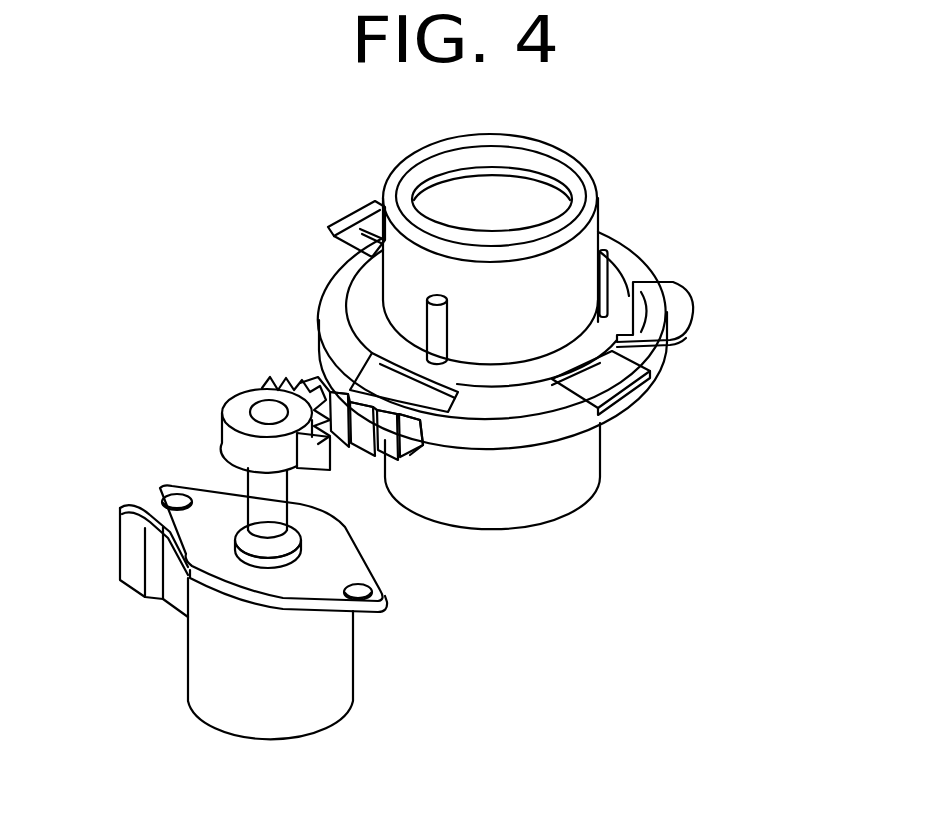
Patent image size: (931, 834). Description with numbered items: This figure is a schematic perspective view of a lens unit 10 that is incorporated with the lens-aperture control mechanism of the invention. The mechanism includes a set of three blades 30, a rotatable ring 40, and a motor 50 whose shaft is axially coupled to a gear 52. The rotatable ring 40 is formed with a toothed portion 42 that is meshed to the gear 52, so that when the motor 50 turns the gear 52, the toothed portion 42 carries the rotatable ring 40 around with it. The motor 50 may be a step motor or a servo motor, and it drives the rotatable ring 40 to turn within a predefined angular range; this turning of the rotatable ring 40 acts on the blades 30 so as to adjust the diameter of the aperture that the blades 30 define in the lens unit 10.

The lens unit 10 is at (580, 273).
The blades 30 is at (362, 218).
The rotatable ring 40 is at (650, 362).
The toothed portion 42 is at (367, 403).
The motor 50 is at (217, 656).
The gear 52 is at (243, 447).